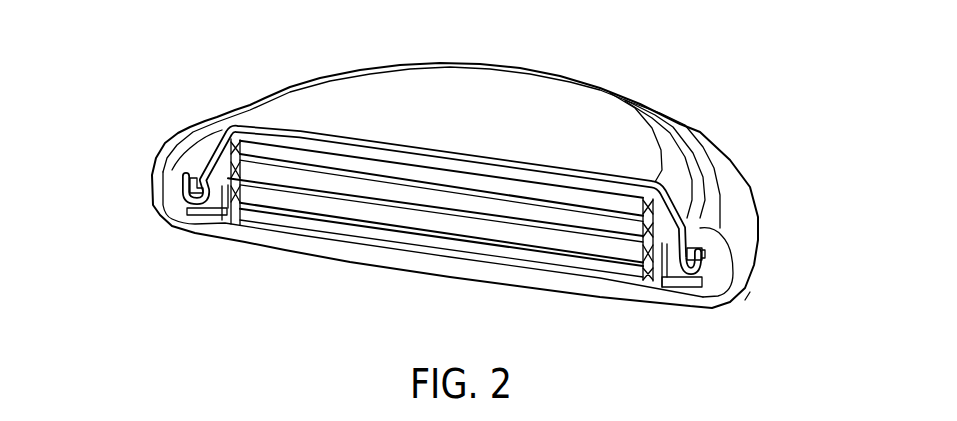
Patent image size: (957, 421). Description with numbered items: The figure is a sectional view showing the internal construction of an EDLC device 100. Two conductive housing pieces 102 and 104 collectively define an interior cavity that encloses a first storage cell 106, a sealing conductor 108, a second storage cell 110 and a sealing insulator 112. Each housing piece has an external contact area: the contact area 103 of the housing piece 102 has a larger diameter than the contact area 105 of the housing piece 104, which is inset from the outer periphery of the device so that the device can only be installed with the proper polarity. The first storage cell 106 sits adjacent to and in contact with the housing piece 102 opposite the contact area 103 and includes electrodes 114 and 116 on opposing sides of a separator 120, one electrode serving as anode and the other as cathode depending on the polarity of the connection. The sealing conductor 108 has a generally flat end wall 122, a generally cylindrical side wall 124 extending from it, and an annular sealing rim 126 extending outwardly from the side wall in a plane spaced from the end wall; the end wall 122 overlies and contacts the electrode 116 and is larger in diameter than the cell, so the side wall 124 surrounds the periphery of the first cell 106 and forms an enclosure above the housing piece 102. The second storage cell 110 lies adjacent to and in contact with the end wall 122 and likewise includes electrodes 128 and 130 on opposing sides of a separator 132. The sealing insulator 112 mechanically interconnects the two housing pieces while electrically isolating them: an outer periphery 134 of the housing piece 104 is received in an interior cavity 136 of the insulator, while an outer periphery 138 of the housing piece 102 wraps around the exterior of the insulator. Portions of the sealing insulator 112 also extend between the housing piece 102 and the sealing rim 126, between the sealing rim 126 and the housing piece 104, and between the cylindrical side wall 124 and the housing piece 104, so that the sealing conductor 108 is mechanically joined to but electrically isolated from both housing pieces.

The EDLC device 100 is at (629, 37).
The housing piece 102 is at (229, 248).
The contact area 103 is at (297, 253).
The housing piece 104 is at (407, 103).
The contact area 105 is at (518, 93).
The first storage cell 106 is at (590, 266).
The sealing conductor 108 is at (386, 208).
The second storage cell 110 is at (456, 185).
The sealing insulator 112 is at (711, 292).
The electrode 114 is at (427, 243).
The electrode 116 is at (480, 230).
The separator 120 is at (540, 247).
The end wall 122 is at (353, 195).
The cylindrical side wall 124 is at (186, 184).
The sealing rim 126 is at (197, 216).
The electrode 128 is at (480, 203).
The electrode 130 is at (590, 190).
The separator 132 is at (537, 203).
The outer periphery 134 is at (702, 256).
The interior cavity 136 is at (735, 284).
The outer periphery 138 is at (735, 302).